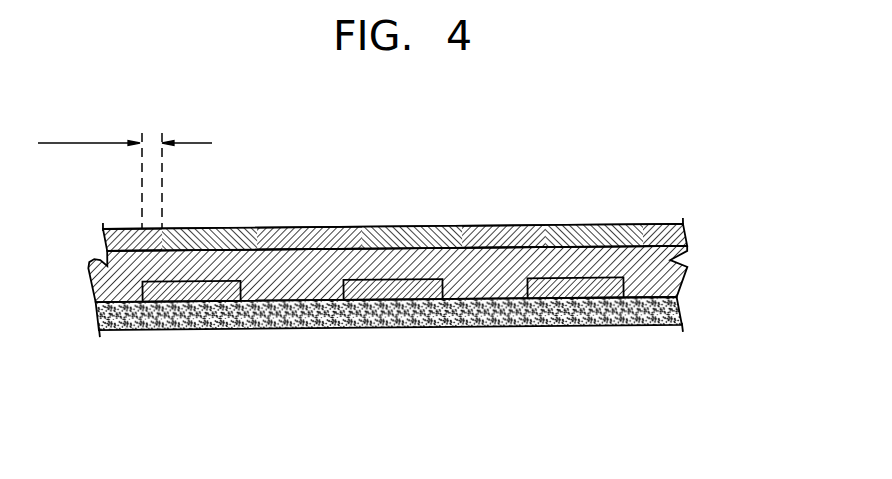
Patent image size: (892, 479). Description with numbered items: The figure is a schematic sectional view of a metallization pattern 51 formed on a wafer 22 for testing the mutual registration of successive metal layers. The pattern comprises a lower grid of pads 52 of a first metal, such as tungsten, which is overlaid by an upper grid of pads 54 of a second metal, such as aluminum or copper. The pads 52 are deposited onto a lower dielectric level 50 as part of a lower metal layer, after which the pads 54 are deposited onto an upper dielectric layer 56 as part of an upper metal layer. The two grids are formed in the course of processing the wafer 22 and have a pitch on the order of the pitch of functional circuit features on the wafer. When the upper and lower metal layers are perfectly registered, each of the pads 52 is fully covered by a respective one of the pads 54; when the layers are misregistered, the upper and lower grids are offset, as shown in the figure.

The wafer 22 is at (678, 90).
The metallization pattern 51 is at (695, 171).
The upper grid of pads 54 is at (222, 231).
The upper dielectric layer 56 is at (685, 265).
The lower grid of pads 52 is at (193, 300).
The lower dielectric level 50 is at (647, 323).